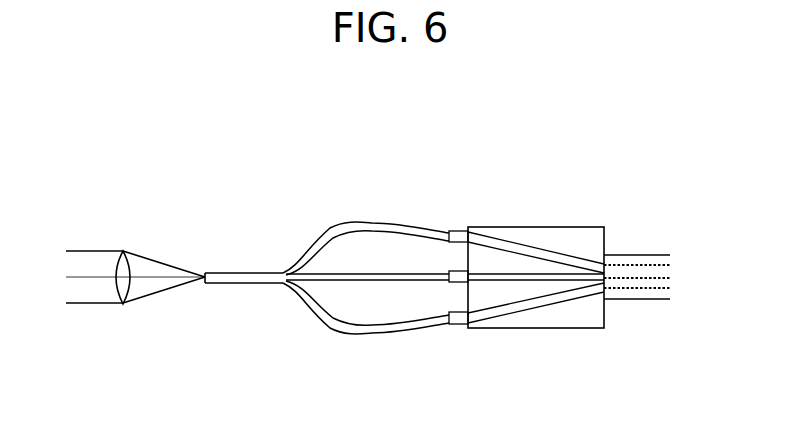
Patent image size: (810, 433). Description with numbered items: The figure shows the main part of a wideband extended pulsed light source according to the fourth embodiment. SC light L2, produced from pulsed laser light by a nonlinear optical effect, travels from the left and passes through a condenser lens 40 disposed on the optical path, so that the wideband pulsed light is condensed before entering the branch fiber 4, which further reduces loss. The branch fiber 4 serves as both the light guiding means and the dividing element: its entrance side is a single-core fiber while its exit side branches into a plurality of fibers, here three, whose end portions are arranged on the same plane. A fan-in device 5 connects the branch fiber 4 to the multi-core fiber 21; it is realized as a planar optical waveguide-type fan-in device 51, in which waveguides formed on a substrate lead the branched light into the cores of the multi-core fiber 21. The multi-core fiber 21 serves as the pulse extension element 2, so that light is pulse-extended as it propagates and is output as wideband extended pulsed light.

The SC light L2 is at (82, 307).
The condenser lens 40 is at (123, 304).
The branch fiber 4 is at (262, 284).
The fan-in device 5 is at (443, 272).
The planar optical waveguide-type fan-in device 51 is at (537, 328).
The pulse extension element 2 is at (667, 274).
The multi-core fiber 21 is at (635, 299).